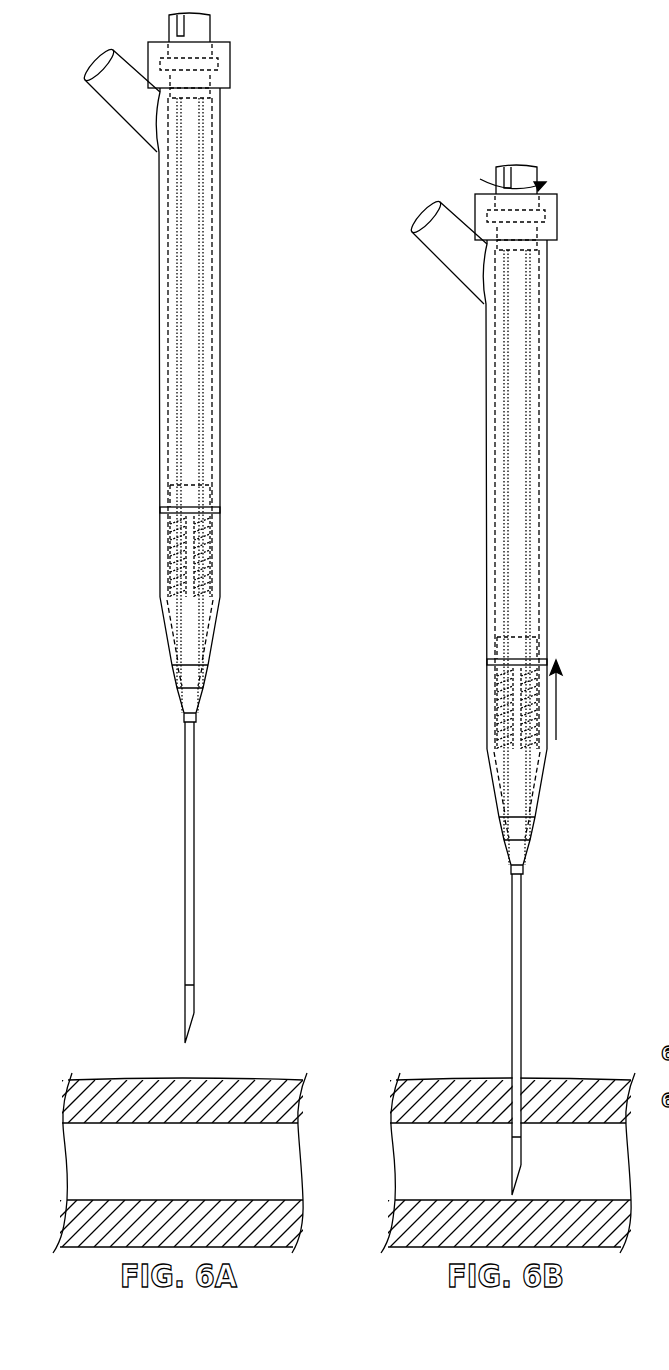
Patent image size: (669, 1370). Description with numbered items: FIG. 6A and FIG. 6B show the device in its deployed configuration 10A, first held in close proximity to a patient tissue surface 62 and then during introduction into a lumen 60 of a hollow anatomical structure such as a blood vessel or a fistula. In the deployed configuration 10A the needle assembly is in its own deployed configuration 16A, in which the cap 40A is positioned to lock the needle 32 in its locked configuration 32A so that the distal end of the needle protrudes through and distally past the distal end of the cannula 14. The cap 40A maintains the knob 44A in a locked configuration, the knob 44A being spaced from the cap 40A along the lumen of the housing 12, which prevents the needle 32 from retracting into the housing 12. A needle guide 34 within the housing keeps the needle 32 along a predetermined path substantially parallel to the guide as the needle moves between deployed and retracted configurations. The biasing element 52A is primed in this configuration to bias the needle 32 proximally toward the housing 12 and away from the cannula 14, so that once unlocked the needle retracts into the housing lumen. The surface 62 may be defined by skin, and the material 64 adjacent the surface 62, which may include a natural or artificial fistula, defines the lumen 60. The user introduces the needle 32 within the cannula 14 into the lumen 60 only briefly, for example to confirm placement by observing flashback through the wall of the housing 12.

In FIG. 6A, the deployed configuration 10A is at (221, 290).
In FIG. 6B, the deployed configuration 10A is at (513, 657).
In FIG. 6A, the housing 12 is at (159, 407).
In FIG. 6B, the housing 12 is at (482, 534).
In FIG. 6A, the cannula 14 is at (185, 882).
In FIG. 6B, the cannula 14 is at (503, 1035).
In FIG. 6A, the deployed configuration of needle assembly 16A is at (213, 32).
In FIG. 6B, the deployed configuration of needle assembly 16A is at (548, 155).
In FIG. 6A, the needle 32 is at (180, 1010).
In FIG. 6B, the locked configuration of needle 32A is at (469, 1118).
In FIG. 6A, the needle guide 34 is at (201, 395).
In FIG. 6B, the cap 40A is at (474, 156).
In FIG. 6B, the knob 44A is at (562, 614).
In FIG. 6A, the biasing element 52A is at (208, 543).
In FIG. 6B, the biasing element 52A is at (467, 731).
In FIG. 6A, the lumen 60 is at (174, 1122).
In FIG. 6B, the lumen 60 is at (502, 1132).
In FIG. 6A, the surface 62 is at (253, 1080).
In FIG. 6B, the surface 62 is at (516, 1052).
In FIG. 6A, the material 64 is at (177, 1057).
In FIG. 6B, the material 64 is at (504, 1067).